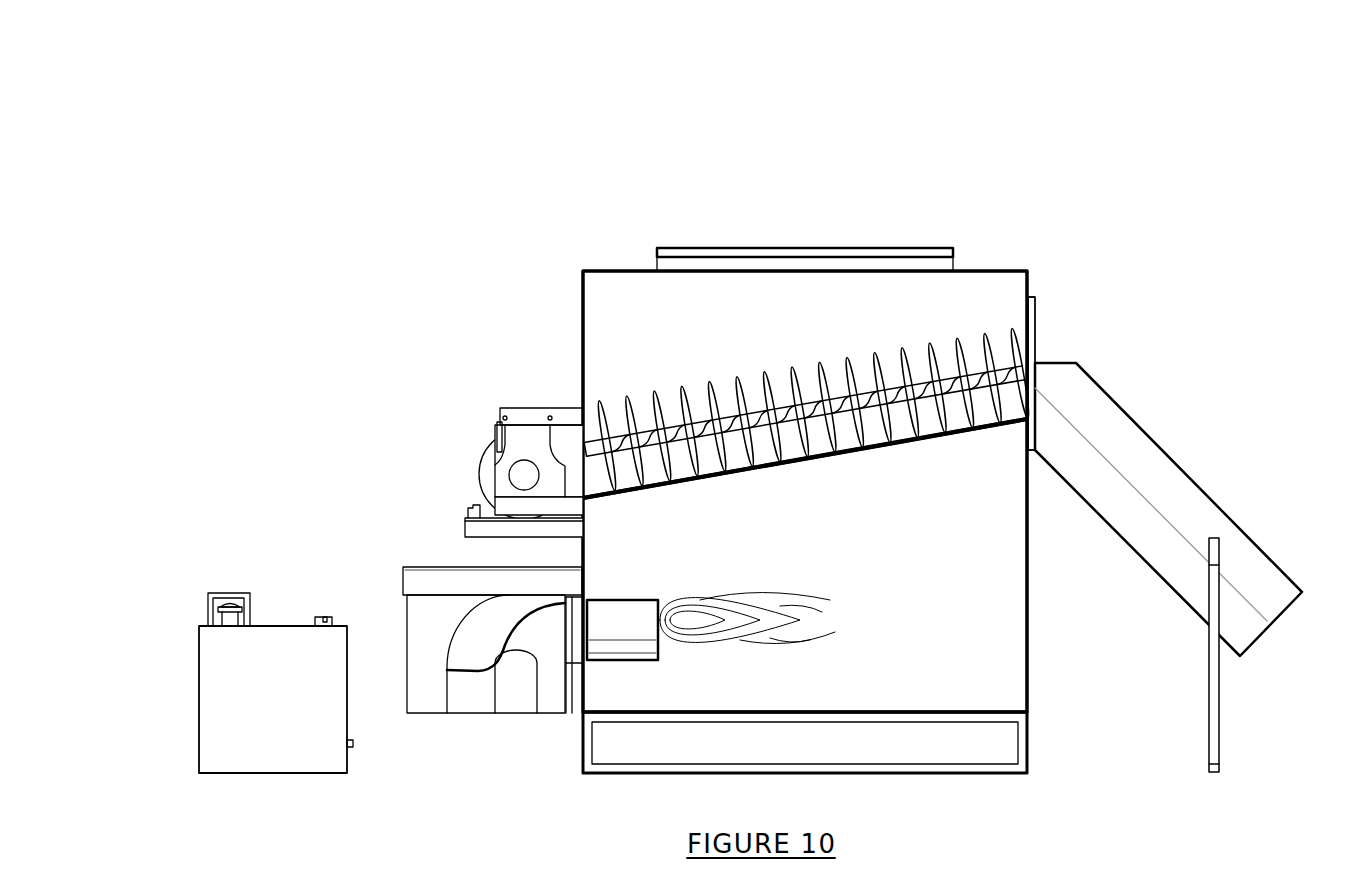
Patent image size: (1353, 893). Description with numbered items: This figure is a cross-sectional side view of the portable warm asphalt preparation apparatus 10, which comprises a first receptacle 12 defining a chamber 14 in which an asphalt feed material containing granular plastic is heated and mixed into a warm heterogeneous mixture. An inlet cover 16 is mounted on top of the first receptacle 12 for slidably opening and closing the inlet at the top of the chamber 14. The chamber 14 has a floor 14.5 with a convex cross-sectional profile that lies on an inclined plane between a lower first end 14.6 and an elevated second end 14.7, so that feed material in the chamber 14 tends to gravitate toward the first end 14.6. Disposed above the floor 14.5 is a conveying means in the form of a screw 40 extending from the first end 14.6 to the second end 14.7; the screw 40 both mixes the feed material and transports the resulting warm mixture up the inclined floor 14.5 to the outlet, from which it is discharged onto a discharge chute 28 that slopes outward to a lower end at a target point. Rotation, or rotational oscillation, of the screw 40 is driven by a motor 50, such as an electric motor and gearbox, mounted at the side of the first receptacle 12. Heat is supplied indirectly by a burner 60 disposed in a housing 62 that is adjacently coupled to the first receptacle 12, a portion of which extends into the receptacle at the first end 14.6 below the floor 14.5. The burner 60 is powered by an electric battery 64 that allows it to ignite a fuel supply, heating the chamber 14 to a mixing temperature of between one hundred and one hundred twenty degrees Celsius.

The portable warm asphalt preparation apparatus 10 is at (1056, 125).
The first receptacle 12 is at (1005, 270).
The chamber 14 is at (792, 333).
The floor 14.5 is at (857, 452).
The first end 14.6 is at (605, 498).
The second end 14.7 is at (993, 430).
The inlet cover 16 is at (797, 250).
The discharge chute 28 is at (1170, 488).
The screw 40 is at (690, 403).
The motor 50 is at (452, 442).
The burner 60 is at (618, 648).
The housing 62 is at (425, 565).
The electric battery 64 is at (291, 633).